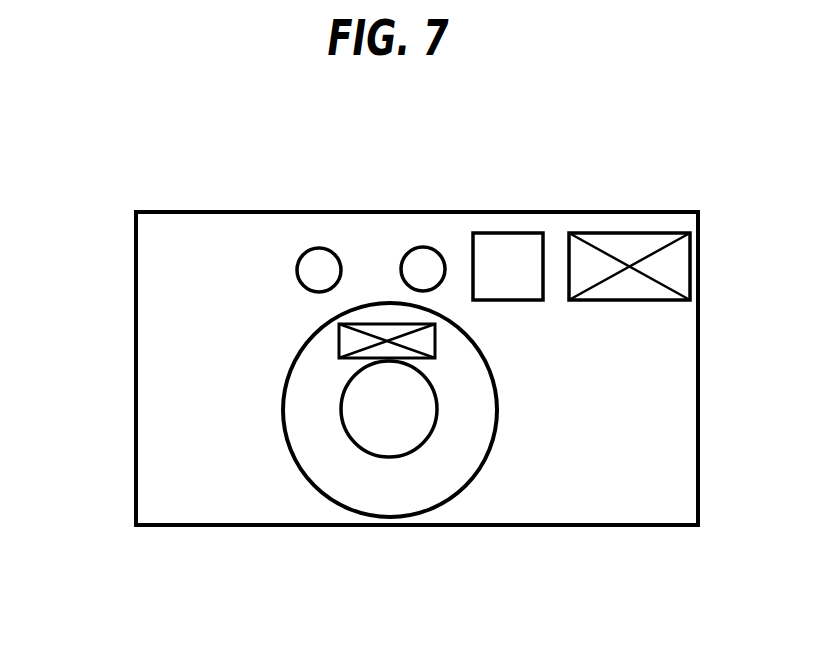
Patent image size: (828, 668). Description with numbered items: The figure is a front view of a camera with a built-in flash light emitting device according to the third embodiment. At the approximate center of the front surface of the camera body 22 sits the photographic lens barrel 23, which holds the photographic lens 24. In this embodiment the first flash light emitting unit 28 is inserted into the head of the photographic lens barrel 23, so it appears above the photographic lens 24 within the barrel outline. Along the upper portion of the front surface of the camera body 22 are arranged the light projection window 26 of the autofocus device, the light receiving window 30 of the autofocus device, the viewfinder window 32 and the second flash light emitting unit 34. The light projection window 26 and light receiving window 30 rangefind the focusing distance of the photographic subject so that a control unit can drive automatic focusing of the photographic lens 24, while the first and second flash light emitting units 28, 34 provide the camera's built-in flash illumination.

The camera body 22 is at (170, 370).
The photographic lens barrel 23 is at (402, 478).
The photographic lens 24 is at (358, 418).
The light projection window 26 is at (322, 248).
The first flash light emitting unit 28 is at (348, 340).
The light receiving window 30 is at (423, 247).
The viewfinder window 32 is at (492, 257).
The second flash light emitting unit 34 is at (595, 255).